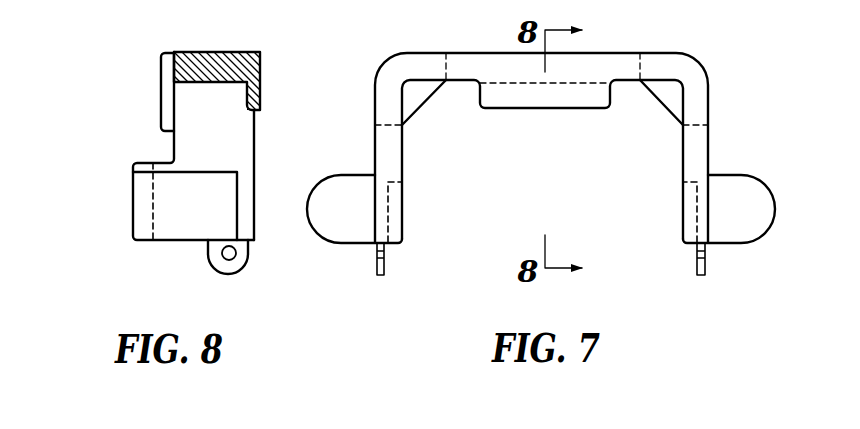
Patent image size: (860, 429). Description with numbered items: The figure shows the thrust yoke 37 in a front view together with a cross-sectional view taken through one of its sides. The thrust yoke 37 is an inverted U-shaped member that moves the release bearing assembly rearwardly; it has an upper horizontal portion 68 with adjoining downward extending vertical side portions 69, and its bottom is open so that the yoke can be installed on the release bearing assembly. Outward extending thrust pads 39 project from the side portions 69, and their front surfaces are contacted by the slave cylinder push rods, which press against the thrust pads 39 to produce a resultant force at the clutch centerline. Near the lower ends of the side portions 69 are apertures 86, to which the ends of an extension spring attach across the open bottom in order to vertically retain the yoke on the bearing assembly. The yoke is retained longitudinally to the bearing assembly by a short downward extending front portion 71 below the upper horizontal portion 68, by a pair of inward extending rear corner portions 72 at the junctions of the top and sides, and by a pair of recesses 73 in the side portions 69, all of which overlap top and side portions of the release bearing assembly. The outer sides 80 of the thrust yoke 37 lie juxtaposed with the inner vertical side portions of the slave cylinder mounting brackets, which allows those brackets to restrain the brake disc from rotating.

In FIG. 8, the thrust yoke 37 is at (122, 147).
In FIG. 7, the thrust yoke 37 is at (378, 2).
In FIG. 8, the thrust pads 39 is at (145, 200).
In FIG. 7, the thrust pads 39 is at (325, 203).
In FIG. 8, the upper horizontal portion 68 is at (203, 52).
In FIG. 7, the upper horizontal portion 68 is at (620, 53).
In FIG. 8, the vertical side portions 69 is at (243, 271).
In FIG. 7, the vertical side portions 69 is at (387, 260).
In FIG. 8, the front portion 71 is at (262, 96).
In FIG. 7, the front portion 71 is at (517, 108).
In FIG. 8, the rear corner portions 72 is at (161, 84).
In FIG. 7, the rear corner portions 72 is at (418, 107).
In FIG. 8, the recesses 73 is at (195, 215).
In FIG. 7, the recesses 73 is at (392, 225).
In FIG. 7, the outer sides 80 is at (375, 142).
In FIG. 8, the apertures 86 is at (223, 262).
In FIG. 7, the apertures 86 is at (377, 252).